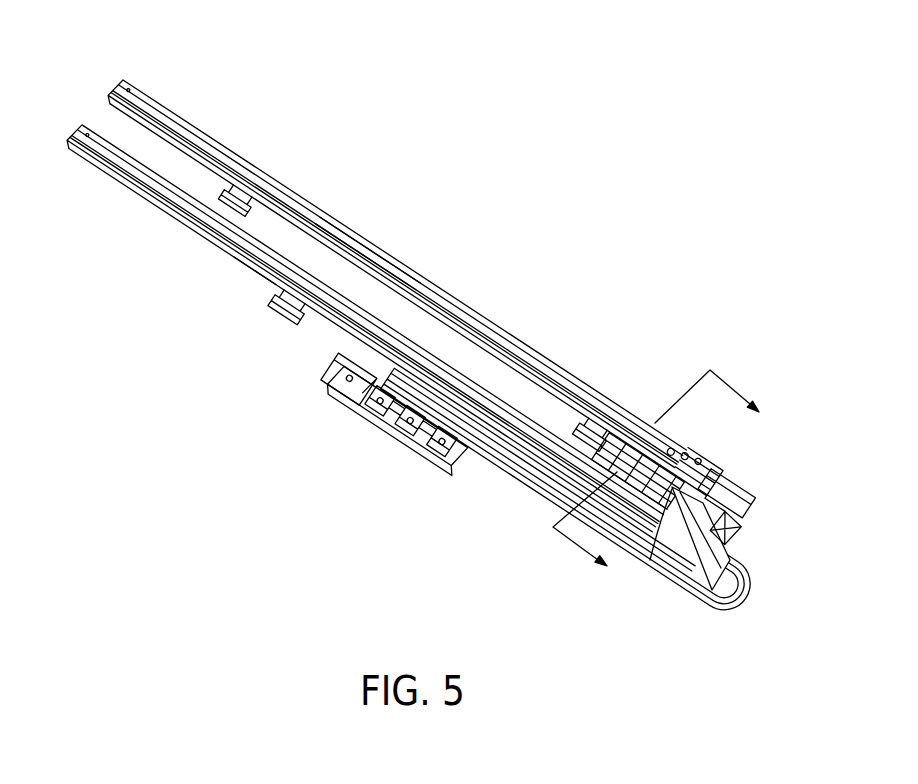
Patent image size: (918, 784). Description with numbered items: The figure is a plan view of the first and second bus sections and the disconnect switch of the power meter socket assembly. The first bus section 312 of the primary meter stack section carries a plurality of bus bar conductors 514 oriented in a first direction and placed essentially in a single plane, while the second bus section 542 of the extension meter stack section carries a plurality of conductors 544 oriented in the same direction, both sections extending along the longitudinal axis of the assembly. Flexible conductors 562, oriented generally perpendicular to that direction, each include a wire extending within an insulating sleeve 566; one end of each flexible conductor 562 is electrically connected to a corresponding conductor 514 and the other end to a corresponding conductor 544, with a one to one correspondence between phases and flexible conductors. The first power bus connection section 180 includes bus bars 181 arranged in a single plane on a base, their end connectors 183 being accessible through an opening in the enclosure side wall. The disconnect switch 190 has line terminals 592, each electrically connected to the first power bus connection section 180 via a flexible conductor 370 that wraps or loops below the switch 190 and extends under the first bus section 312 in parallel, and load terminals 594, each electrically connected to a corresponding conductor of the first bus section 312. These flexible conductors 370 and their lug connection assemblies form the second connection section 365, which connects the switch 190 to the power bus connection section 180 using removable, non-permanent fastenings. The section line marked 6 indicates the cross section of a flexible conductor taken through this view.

The second bus section 542 is at (244, 100).
The conductors 544 is at (370, 248).
The first bus section 312 is at (138, 208).
The conductors 514 is at (240, 266).
The first power bus connection section 180 is at (364, 436).
The bus bars 181 is at (360, 367).
The end connectors 183 is at (337, 392).
The second connection section 365 is at (552, 441).
The flexible conductors 370 is at (557, 493).
The flexible conductors 562 is at (650, 460).
The insulating sleeve 566 is at (718, 486).
The line terminals 592 is at (750, 576).
The load terminals 594 is at (650, 560).
The disconnect switch 190 is at (680, 535).
The section line for FIG. 6 is at (665, 485).